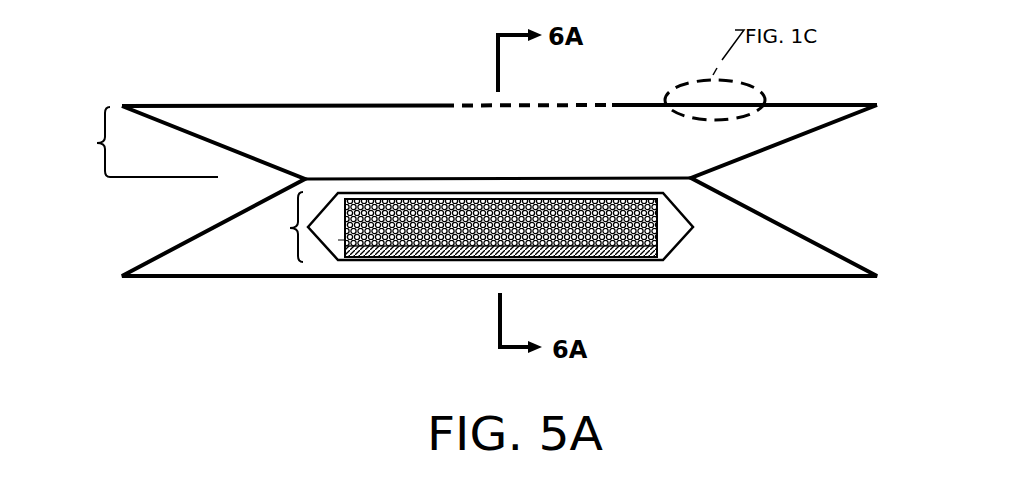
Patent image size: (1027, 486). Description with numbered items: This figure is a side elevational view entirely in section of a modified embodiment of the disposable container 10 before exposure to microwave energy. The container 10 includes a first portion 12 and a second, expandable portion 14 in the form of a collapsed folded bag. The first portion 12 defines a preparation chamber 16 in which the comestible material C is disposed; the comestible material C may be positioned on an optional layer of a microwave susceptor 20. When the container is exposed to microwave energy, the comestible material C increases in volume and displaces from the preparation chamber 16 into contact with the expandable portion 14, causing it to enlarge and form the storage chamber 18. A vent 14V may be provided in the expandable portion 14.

The container 10 is at (330, 56).
The first portion 12 is at (290, 228).
The expandable portion 14 is at (265, 105).
The vent 14V is at (463, 90).
The preparation chamber 16 is at (682, 244).
The storage chamber 18 is at (144, 142).
The microwave susceptor 20 is at (513, 248).
The comestible material C is at (342, 240).